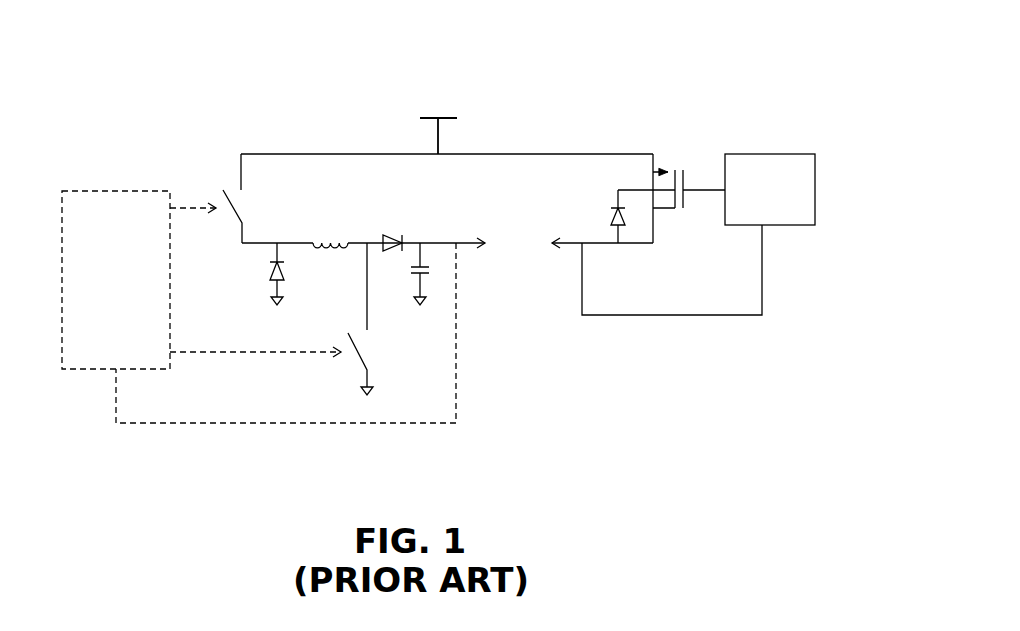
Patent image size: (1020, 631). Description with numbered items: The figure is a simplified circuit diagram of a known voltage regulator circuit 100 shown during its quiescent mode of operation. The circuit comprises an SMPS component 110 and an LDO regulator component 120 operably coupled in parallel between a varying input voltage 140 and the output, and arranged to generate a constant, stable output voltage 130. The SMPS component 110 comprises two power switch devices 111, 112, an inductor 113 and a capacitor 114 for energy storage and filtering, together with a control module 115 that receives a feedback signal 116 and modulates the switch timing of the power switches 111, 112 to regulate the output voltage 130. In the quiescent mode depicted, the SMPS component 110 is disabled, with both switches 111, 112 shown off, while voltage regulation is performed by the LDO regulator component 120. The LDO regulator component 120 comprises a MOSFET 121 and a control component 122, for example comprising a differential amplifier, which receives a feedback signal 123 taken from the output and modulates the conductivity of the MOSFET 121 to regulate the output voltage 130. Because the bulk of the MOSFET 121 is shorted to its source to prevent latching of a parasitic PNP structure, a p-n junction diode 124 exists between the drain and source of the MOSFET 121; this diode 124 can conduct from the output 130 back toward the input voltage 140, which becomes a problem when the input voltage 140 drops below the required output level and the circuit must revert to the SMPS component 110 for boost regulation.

The voltage regulator circuit 100 is at (168, 63).
The SMPS component 110 is at (113, 466).
The power switch device 111 is at (247, 207).
The power switch device 112 is at (374, 349).
The inductor 113 is at (331, 236).
The capacitor 114 is at (402, 287).
The control module 115 is at (79, 184).
The feedback signal 116 is at (261, 428).
The LDO regulator component 120 is at (762, 391).
The MOSFET 121 is at (671, 146).
The control component 122 is at (799, 232).
The feedback signal 123 is at (655, 322).
The p-n junction diode 124 is at (595, 209).
The output voltage 130 is at (528, 267).
The input voltage 140 is at (342, 93).